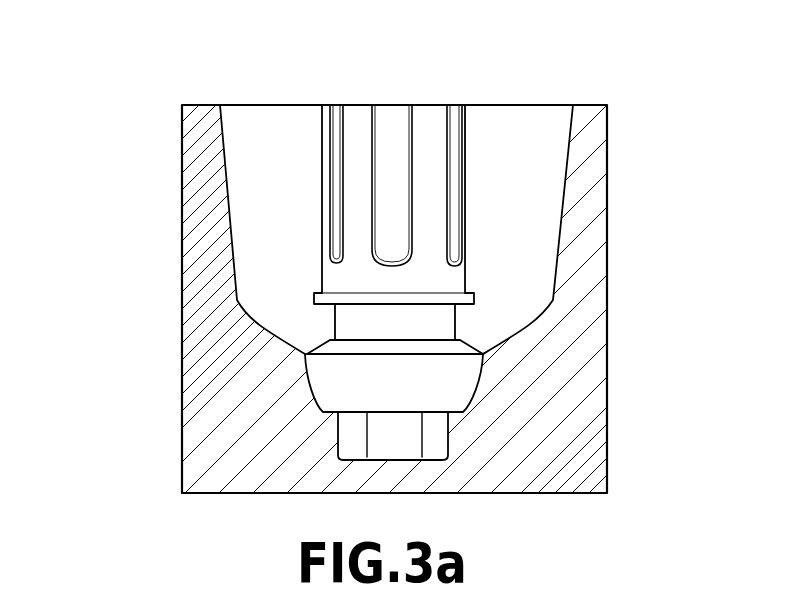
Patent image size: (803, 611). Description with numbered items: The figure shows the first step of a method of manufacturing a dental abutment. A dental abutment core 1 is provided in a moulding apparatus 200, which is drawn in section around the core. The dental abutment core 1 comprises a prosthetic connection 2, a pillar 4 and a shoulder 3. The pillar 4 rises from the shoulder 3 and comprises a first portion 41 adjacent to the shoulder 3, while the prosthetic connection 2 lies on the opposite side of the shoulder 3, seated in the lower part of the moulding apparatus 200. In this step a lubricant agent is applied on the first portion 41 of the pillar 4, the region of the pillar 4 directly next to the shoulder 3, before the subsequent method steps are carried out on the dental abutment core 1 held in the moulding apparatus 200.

The moulding apparatus 200 is at (183, 158).
The dental abutment core 1 is at (492, 125).
The pillar 4 is at (315, 187).
The first portion 41 is at (345, 322).
The shoulder 3 is at (453, 380).
The prosthetic connection 2 is at (437, 436).